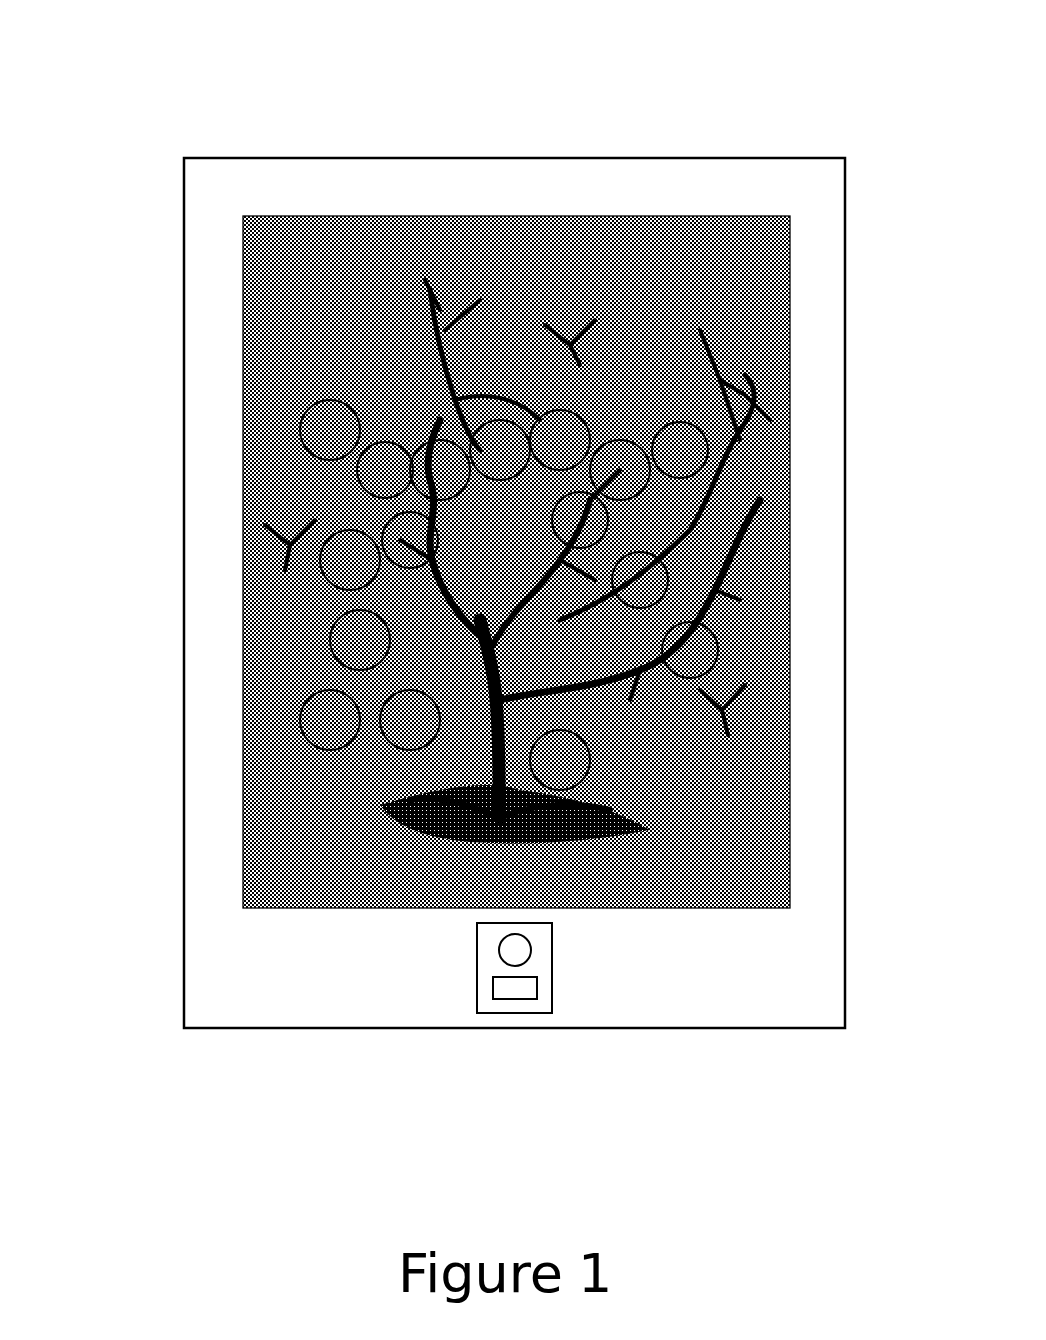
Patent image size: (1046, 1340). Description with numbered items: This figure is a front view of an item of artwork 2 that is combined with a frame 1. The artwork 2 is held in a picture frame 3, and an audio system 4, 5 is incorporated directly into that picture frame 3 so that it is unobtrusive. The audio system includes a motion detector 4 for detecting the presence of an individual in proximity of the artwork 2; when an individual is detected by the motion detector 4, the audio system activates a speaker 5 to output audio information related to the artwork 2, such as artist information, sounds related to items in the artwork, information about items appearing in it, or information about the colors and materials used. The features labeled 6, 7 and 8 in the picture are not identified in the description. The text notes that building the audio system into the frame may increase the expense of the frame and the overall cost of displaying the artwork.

The frame 1 is at (150, 104).
The item of artwork 2 is at (605, 247).
The picture frame 3 is at (485, 173).
The motion detector 4 is at (500, 950).
The speaker 5 is at (530, 990).
The displayed image / tree 6 is at (530, 787).
The flowers in displayed image 7 is at (307, 465).
The birds in displayed image 8 is at (575, 345).